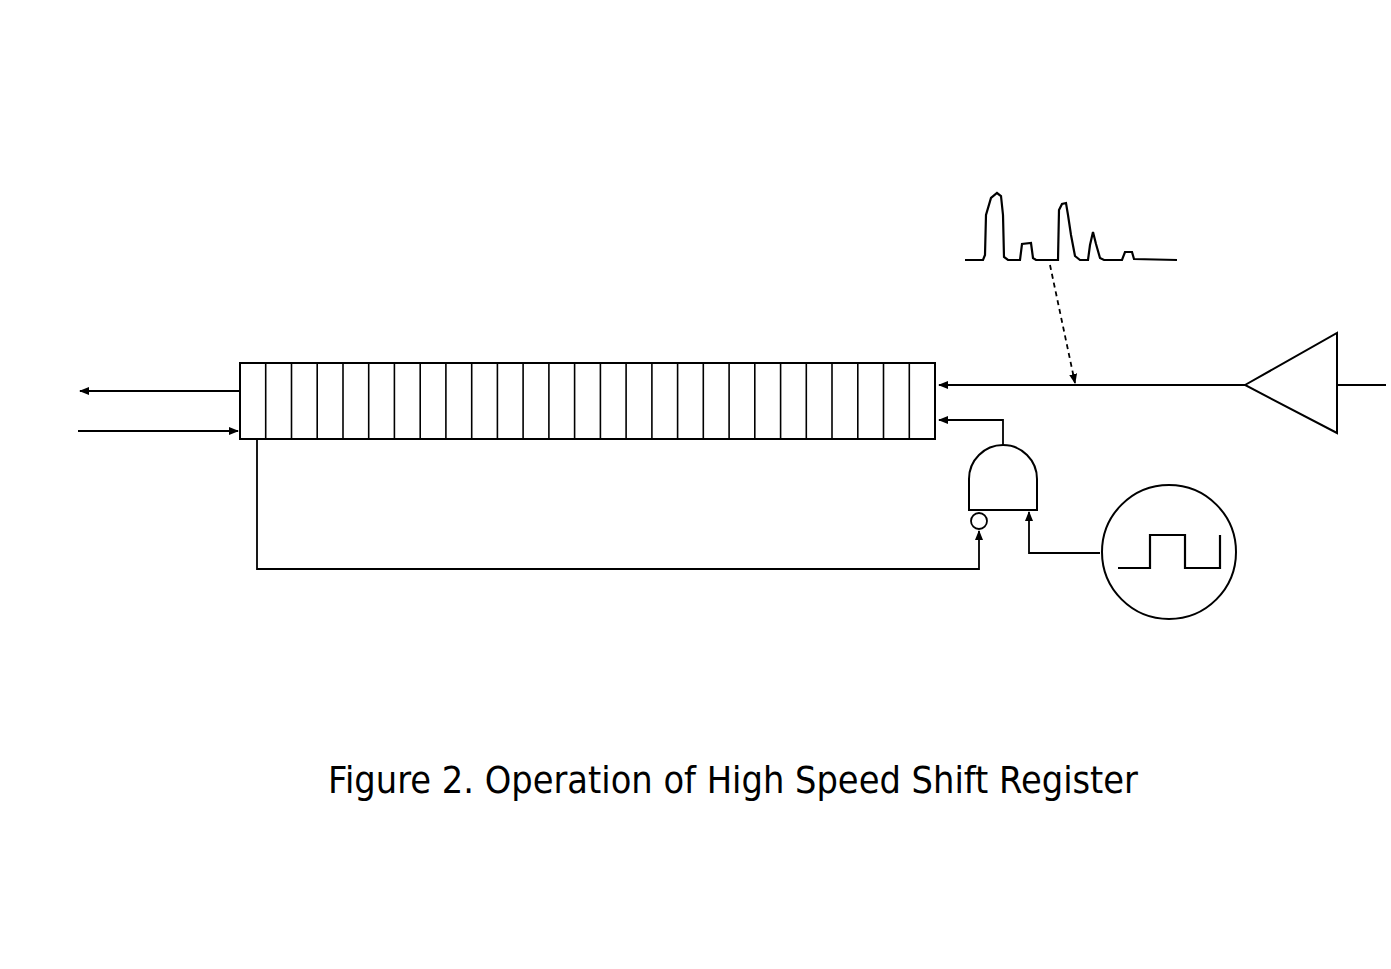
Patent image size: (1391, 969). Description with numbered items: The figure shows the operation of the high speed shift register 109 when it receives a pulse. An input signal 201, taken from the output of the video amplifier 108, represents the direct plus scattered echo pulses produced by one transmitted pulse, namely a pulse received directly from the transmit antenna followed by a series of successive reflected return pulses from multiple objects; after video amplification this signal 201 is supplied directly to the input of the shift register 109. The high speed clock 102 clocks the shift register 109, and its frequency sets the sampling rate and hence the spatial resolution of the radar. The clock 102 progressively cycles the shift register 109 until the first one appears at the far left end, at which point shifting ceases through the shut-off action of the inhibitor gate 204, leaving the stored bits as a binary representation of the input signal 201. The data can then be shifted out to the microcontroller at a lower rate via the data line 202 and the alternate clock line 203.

The high speed shift register 109 is at (587, 350).
The data line 202 is at (150, 354).
The alternate clock line 203 is at (153, 467).
The inhibitor gate 204 is at (678, 494).
The video amplifier 108 is at (1164, 340).
The input signal 201 is at (1053, 225).
The high speed clock 102 is at (1189, 577).